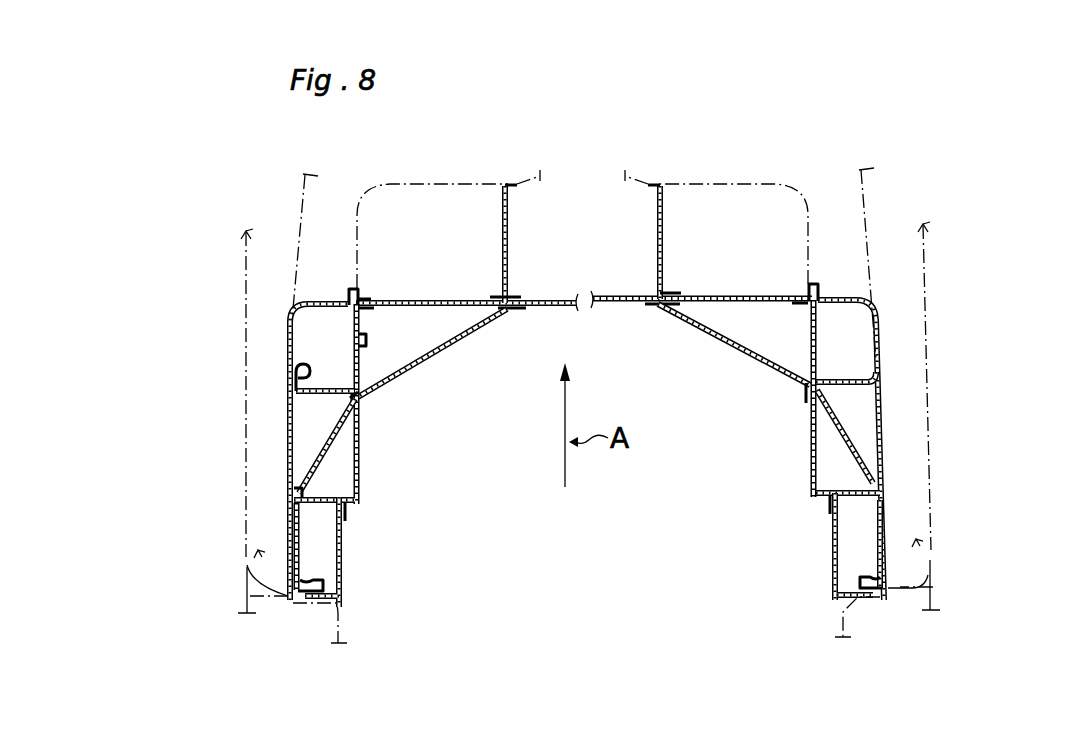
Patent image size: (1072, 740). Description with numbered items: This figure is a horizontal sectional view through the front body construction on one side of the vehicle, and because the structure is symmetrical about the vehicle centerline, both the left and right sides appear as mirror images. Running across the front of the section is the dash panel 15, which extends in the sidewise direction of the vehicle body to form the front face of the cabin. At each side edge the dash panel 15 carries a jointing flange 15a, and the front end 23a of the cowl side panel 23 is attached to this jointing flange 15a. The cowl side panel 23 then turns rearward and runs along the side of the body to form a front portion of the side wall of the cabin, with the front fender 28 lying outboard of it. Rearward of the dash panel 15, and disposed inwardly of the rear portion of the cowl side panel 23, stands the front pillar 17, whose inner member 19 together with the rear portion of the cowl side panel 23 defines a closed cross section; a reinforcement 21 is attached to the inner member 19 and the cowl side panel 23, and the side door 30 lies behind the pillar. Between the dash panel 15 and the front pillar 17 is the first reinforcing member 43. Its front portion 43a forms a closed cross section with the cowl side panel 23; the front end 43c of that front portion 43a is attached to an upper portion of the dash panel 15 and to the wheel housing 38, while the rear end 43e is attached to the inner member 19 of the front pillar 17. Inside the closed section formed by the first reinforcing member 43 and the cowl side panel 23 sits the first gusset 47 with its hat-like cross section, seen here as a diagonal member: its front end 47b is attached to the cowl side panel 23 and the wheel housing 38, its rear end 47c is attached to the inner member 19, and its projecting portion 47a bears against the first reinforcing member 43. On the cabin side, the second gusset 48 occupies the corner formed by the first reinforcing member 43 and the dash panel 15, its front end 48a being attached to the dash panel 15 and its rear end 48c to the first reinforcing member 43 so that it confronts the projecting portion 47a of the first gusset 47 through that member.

The dash panel 15 is at (557, 295).
The jointing flange 15a is at (361, 299).
The front pillar 17 is at (291, 597).
The inner member 19 is at (345, 568).
The reinforcement 21 is at (303, 535).
The cowl side panel 23 is at (289, 411).
The front end 23a is at (351, 289).
The front fender 28 is at (246, 305).
The side door 30 is at (250, 597).
The wheel housing 38 is at (502, 250).
The first reinforcing member 43 is at (366, 425).
The front portion 43a is at (365, 346).
The front end 43c is at (366, 308).
The rear end 43e is at (348, 512).
The first gusset 47 is at (337, 441).
The projecting portion 47a is at (352, 396).
The front end 47b is at (298, 369).
The rear end 47c is at (300, 490).
The second gusset 48 is at (436, 353).
The front end 48a is at (653, 306).
The rear end 48c is at (371, 398).